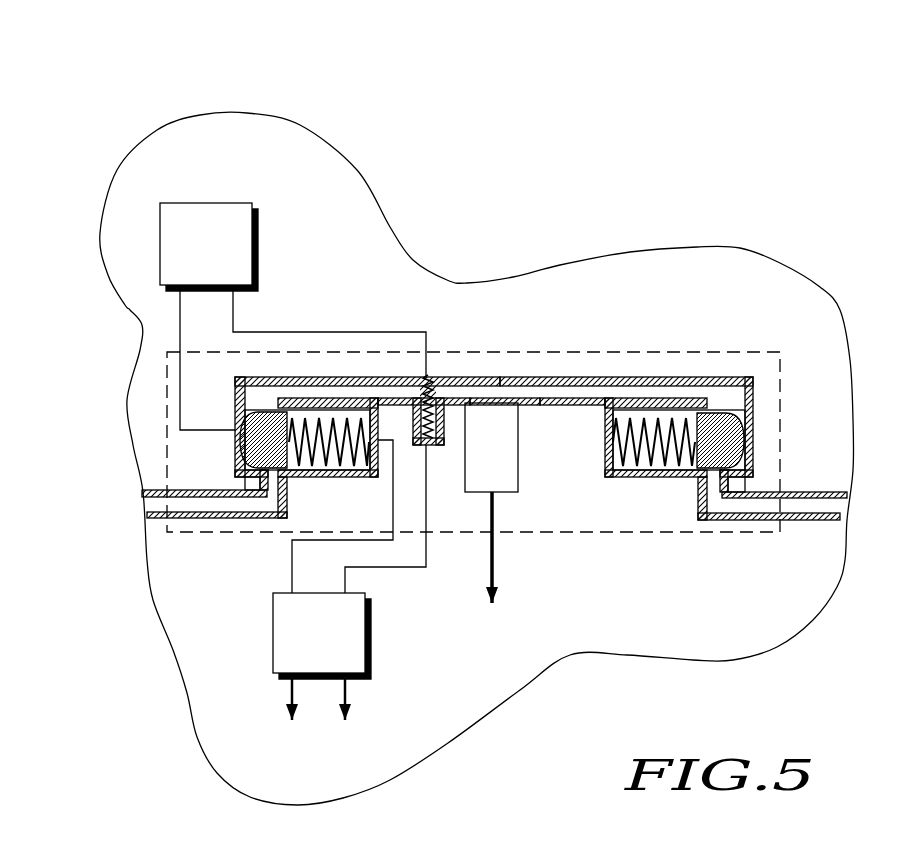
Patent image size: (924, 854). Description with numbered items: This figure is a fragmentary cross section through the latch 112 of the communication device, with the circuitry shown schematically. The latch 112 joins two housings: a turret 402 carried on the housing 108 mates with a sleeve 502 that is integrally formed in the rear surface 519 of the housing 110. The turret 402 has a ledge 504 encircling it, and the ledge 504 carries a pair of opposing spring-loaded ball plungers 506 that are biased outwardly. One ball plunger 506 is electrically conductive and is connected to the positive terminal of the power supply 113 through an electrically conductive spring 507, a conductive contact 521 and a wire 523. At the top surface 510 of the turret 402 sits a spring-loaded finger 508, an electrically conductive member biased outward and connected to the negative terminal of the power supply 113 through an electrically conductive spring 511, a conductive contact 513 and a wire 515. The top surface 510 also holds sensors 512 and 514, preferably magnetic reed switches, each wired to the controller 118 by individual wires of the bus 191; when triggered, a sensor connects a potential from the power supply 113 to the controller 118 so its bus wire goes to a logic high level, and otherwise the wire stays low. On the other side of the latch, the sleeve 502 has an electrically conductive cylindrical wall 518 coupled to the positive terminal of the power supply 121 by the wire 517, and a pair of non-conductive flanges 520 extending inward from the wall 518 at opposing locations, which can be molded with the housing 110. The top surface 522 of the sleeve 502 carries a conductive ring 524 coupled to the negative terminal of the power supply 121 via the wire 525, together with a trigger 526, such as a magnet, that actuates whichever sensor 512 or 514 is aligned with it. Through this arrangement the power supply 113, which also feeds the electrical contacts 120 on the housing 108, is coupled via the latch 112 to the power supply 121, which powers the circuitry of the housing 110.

The housing 108 is at (793, 520).
The housing 110 is at (560, 265).
The latch 112 is at (753, 535).
The power supply 113 is at (368, 652).
The controller 118 is at (492, 636).
The electrical contacts 120 is at (318, 726).
The power supply 121 is at (258, 228).
The bus 191 is at (494, 562).
The turret 402 is at (552, 465).
The sleeve 502 is at (493, 537).
The ledge 504 is at (235, 408).
The spring-loaded ball plunger 506 is at (483, 494).
The electrically conductive spring 507 is at (330, 420).
The spring-loaded finger 508 is at (423, 388).
The top surface 510 is at (582, 398).
The electrically conductive spring 511 is at (450, 400).
The sensor 512 is at (491, 447).
The conductive contact 513 is at (432, 445).
The sensor 514 is at (520, 405).
The wire 515 is at (384, 567).
The wire 517 is at (181, 418).
The electrically conductive cylindrical wall 518 is at (233, 460).
The rear surface 519 is at (803, 500).
The flange 520 is at (240, 488).
The conductive contact 521 is at (382, 465).
The top surface 522 is at (637, 377).
The wire 523 is at (290, 570).
The conductive ring 524 is at (432, 377).
The wire 525 is at (325, 332).
The trigger 526 is at (450, 388).